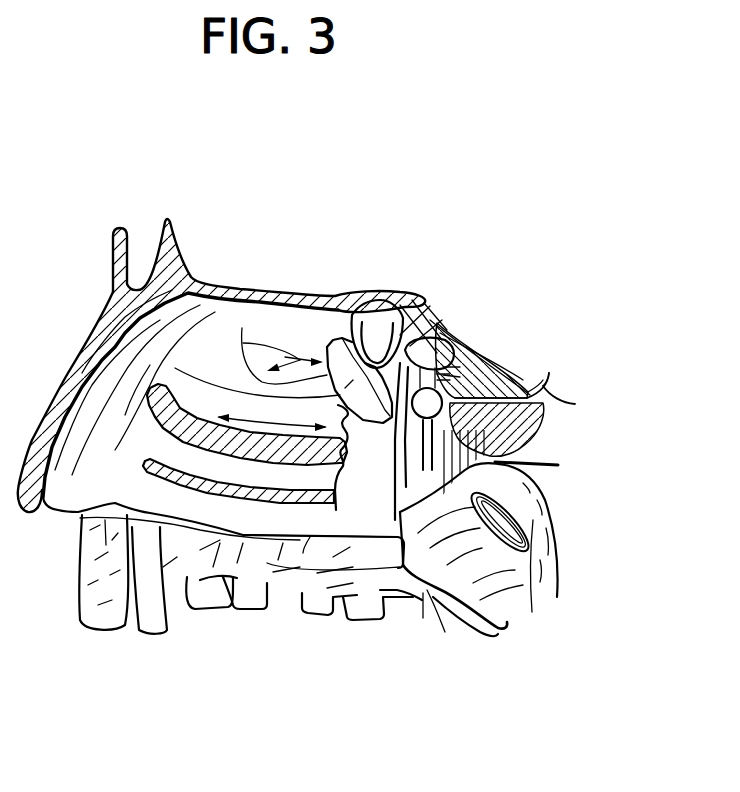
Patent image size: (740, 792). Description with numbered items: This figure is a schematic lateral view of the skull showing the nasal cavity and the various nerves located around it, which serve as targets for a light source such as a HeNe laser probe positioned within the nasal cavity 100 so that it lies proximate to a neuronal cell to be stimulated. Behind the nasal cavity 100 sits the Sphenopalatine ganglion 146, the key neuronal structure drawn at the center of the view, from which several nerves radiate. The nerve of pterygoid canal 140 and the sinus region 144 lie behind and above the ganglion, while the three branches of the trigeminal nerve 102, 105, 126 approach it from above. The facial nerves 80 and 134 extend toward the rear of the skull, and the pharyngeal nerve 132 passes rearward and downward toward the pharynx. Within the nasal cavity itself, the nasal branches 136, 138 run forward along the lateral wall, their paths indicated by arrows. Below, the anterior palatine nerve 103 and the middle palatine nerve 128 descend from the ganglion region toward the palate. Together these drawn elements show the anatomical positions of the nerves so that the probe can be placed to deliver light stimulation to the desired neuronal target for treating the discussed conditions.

The nasal cavity 100 is at (280, 337).
The Sphenopalatine ganglion 146 is at (385, 352).
The trigeminal nerve branch 105 is at (422, 348).
The trigeminal nerve branch 126 is at (432, 353).
The nerve of pterygoid canal 140 is at (457, 355).
The trigeminal nerve branch 102 is at (475, 363).
The sphenoid sinus ostium 144 is at (533, 355).
The facial nerve 80 is at (543, 380).
The facial nerve 134 is at (551, 376).
The pharyngeal nerve 132 is at (537, 407).
The nasal branch 136 is at (243, 343).
The nasal branch 138 is at (247, 415).
The anterior palatine nerve 103 is at (300, 565).
The middle palatine nerve 128 is at (378, 498).